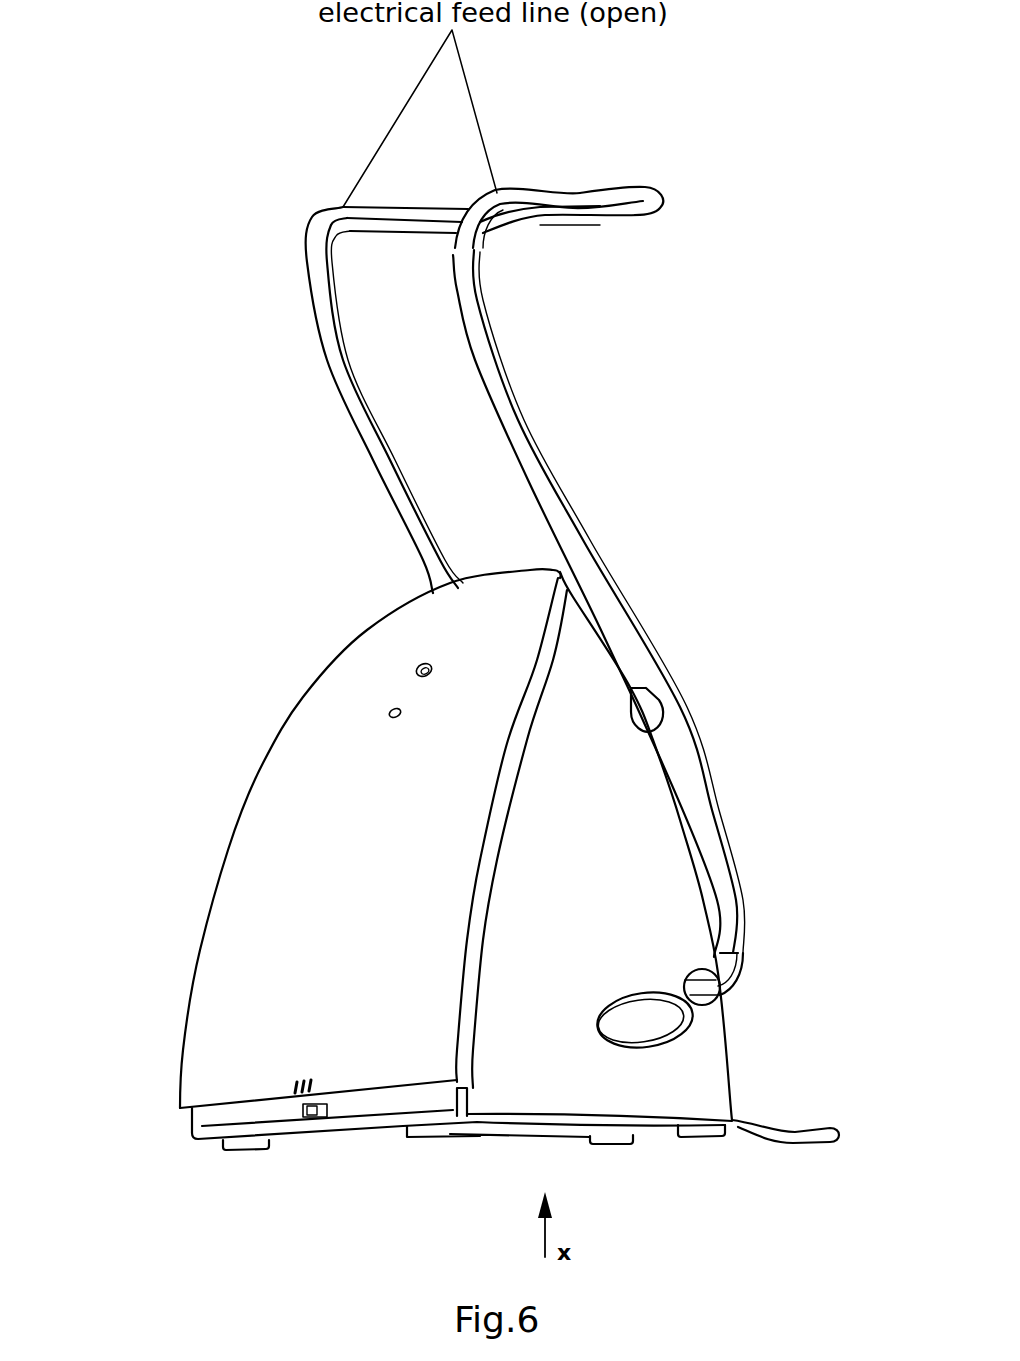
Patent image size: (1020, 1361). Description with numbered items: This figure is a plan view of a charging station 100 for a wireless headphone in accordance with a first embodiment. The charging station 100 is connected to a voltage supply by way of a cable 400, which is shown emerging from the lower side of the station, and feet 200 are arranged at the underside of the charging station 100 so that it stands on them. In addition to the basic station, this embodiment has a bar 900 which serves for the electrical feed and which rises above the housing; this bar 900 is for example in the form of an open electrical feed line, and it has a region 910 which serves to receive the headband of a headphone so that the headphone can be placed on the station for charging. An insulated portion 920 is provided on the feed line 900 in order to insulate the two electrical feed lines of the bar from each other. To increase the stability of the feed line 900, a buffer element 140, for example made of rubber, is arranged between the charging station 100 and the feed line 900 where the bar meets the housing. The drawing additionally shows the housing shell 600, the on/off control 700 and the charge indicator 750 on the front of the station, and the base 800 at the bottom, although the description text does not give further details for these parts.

The charging station 100 is at (595, 647).
The buffer element 140 is at (650, 710).
The feet 200 is at (262, 1147).
The cable 400 is at (793, 1143).
The front shell 600 is at (334, 790).
The on/off button 700 is at (413, 668).
The charge indicator 750 is at (387, 713).
The base plate 800 is at (200, 1130).
The bar 900 is at (560, 492).
The region 910 is at (607, 208).
The insulated portion 920 is at (607, 190).